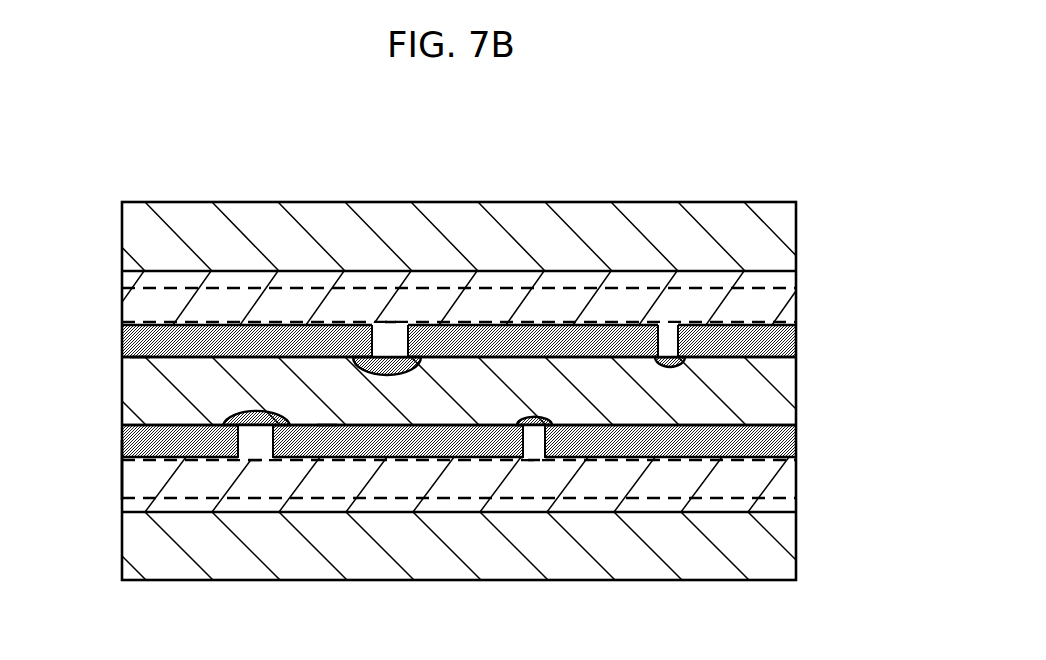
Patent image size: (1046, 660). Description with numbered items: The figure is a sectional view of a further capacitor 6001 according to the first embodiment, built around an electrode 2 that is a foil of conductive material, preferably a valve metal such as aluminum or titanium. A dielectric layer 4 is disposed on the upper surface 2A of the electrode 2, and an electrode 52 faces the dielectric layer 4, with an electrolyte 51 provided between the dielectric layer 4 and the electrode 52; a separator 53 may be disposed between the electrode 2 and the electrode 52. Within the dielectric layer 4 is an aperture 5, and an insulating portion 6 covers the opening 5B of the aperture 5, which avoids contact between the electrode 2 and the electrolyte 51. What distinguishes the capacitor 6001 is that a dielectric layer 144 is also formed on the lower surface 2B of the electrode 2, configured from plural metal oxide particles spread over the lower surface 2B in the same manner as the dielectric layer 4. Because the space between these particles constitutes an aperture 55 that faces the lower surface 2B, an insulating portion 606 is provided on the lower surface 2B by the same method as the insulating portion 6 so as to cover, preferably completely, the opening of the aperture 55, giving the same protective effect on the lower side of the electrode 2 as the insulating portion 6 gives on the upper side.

The capacitor 6001 is at (787, 175).
The electrode 52 is at (782, 215).
The separator 53 is at (778, 320).
The electrolyte 51 is at (138, 312).
The electrode 2 is at (775, 383).
The dielectric layer 4 is at (788, 342).
The dielectric layer 144 is at (788, 448).
The aperture 5 is at (407, 333).
The insulating portion 6 is at (398, 355).
The aperture 55 is at (243, 437).
The insulating portion 606 is at (253, 426).
The upper surface 2A is at (140, 357).
The lower surface 2B is at (327, 433).
The opening 5B is at (138, 420).